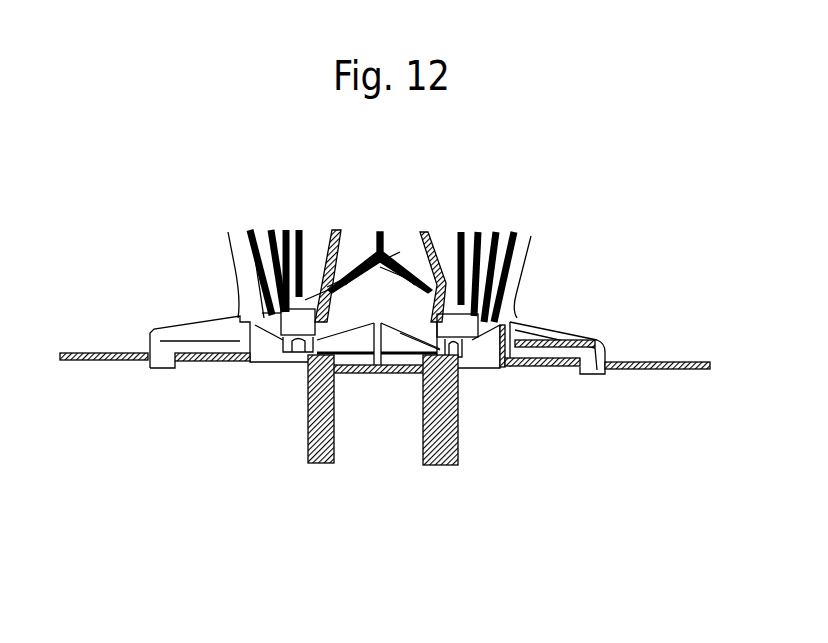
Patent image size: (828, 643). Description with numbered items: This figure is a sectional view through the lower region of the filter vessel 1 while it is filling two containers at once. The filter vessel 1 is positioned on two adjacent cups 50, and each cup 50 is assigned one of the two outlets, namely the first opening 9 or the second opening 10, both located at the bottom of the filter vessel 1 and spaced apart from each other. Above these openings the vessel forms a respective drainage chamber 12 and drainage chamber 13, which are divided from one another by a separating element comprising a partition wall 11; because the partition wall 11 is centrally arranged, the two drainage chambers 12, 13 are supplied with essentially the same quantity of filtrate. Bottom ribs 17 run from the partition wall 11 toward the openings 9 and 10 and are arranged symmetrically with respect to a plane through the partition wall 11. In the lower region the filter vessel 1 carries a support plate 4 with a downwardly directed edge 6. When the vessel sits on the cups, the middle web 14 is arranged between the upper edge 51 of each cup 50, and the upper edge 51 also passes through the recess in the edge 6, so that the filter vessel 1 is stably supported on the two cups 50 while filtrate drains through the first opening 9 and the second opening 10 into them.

The filter vessel 1 is at (240, 245).
The support plate 4 is at (553, 327).
The downwardly directed edge 6 is at (603, 361).
The first opening 9 is at (285, 343).
The second opening 10 is at (463, 350).
The partition wall 11 is at (383, 252).
The drainage chamber 12 is at (298, 330).
The drainage chamber 13 is at (468, 341).
The middle web 14 is at (377, 373).
The bottom ribs 17 is at (352, 288).
The cup 50 is at (322, 458).
The upper edge 51 is at (317, 362).